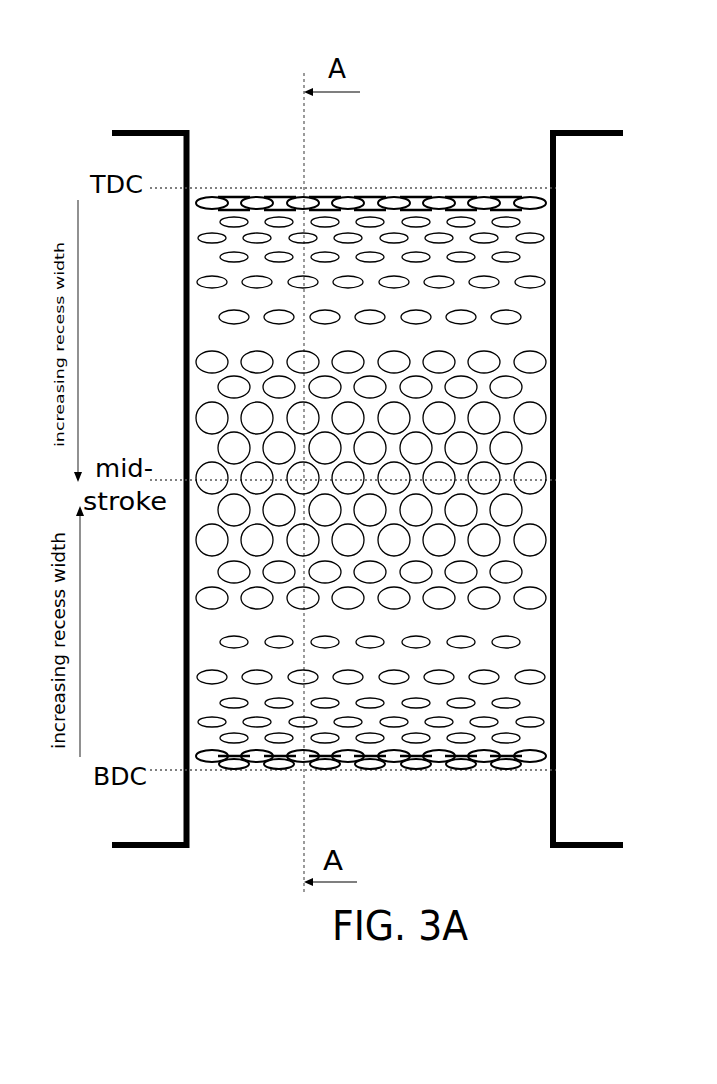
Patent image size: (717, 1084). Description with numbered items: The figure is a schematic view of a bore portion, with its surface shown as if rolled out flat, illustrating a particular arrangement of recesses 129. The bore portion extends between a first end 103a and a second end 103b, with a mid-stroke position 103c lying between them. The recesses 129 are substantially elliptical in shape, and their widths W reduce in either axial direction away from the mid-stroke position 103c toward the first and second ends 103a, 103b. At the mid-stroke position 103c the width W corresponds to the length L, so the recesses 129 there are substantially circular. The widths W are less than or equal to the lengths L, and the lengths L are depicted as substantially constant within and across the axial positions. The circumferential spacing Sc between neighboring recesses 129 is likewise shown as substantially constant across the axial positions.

The first end 103a is at (556, 773).
The second end 103b is at (555, 188).
The mid-stroke position 103c is at (556, 480).
The recesses 129 is at (536, 359).
The length L is at (264, 318).
The width W is at (508, 292).
The circumferential spacing Sc is at (458, 673).